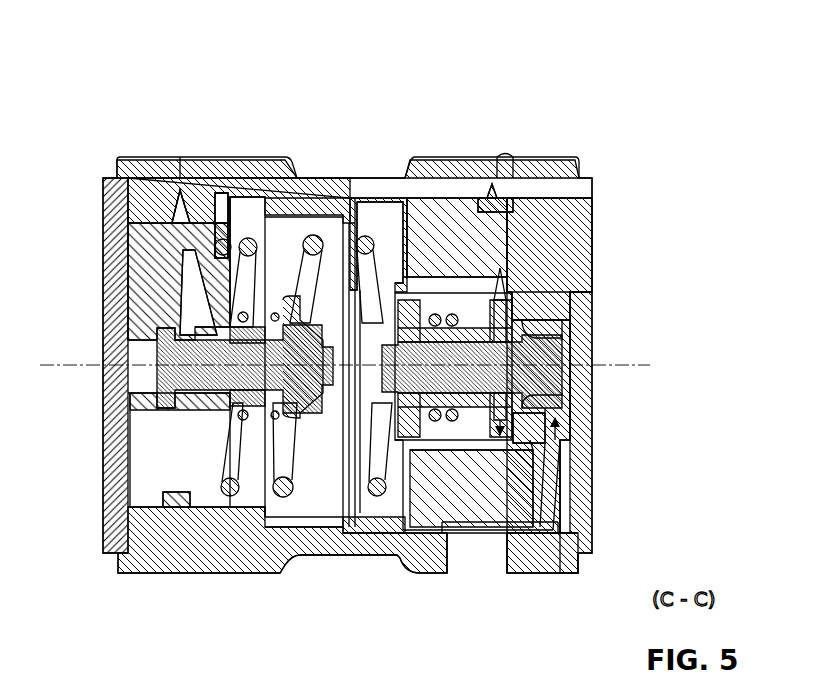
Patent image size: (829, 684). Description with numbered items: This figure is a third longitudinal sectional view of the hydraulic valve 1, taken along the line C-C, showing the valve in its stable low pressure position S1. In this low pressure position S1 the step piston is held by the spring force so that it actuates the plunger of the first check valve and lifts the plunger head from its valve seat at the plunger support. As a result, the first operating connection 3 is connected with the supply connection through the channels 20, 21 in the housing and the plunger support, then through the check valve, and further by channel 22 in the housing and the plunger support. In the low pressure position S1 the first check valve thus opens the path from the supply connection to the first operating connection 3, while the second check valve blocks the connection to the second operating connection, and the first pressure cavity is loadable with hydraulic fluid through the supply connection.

The hydraulic valve 1 is at (720, 148).
The low pressure position S1 is at (616, 128).
The first operating connection 3 is at (486, 565).
The channel 20 is at (556, 480).
The channel 21 is at (553, 412).
The channel 22 is at (556, 402).